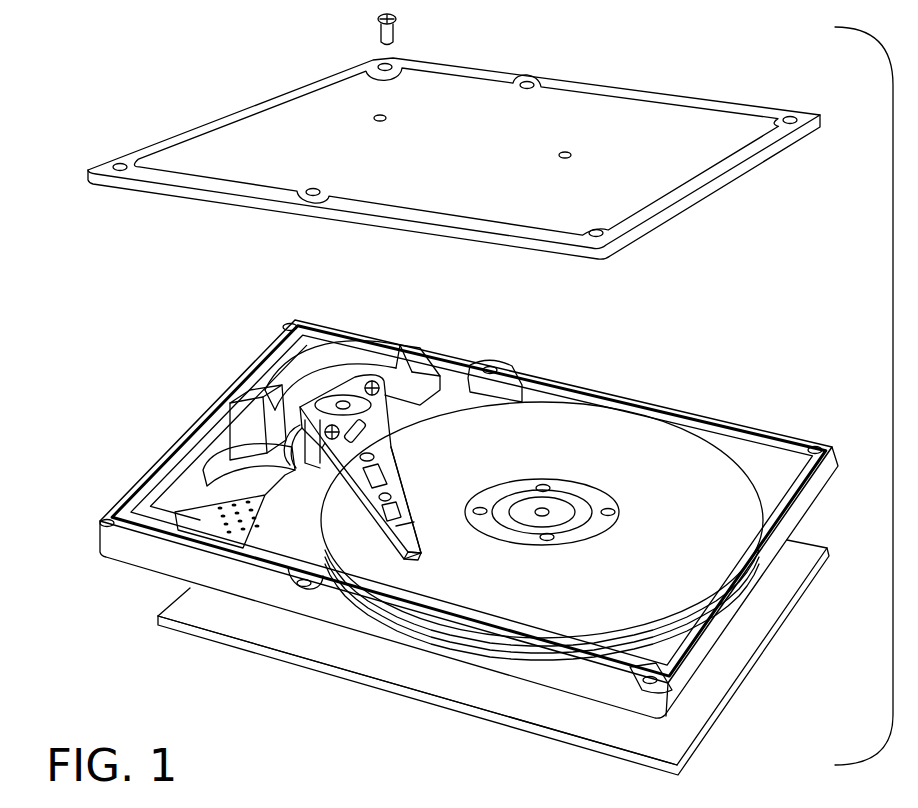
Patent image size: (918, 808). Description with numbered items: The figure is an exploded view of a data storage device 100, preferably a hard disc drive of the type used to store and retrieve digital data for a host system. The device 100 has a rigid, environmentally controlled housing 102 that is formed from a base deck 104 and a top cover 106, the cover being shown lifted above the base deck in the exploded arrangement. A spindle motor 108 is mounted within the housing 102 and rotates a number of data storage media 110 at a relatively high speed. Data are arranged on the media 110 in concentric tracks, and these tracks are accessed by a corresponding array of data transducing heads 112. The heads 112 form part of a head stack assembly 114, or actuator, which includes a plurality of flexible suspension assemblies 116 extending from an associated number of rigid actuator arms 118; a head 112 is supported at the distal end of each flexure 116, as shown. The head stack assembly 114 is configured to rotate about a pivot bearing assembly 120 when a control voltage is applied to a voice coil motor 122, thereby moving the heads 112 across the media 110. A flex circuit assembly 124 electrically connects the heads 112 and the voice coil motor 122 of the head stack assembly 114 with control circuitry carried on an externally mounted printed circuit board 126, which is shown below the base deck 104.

The data storage device 100 is at (158, 67).
The housing 102 is at (145, 318).
The base deck 104 is at (733, 610).
The top cover 106 is at (560, 107).
The spindle motor 108 is at (546, 486).
The data storage media 110 is at (574, 640).
The data transducing heads 112 is at (418, 558).
The head stack assembly 114 is at (381, 452).
The flexible suspension assemblies 116 is at (407, 541).
The rigid actuator arms 118 is at (405, 482).
The pivot bearing assembly 120 is at (345, 404).
The voice coil motor 122 is at (322, 362).
The flex circuit assembly 124 is at (230, 470).
The printed circuit board 126 is at (260, 652).